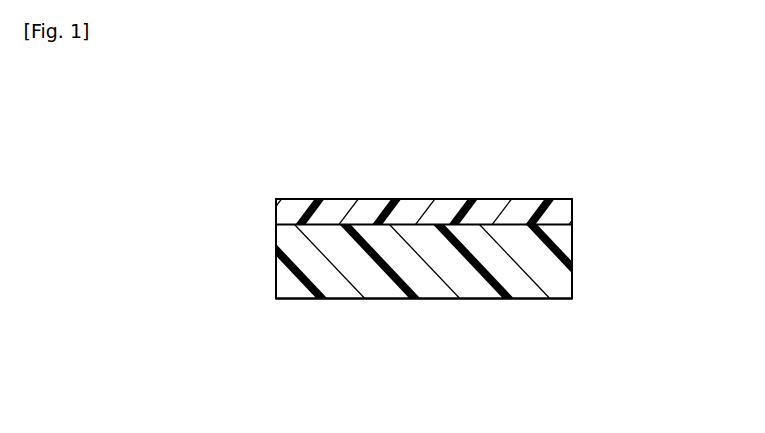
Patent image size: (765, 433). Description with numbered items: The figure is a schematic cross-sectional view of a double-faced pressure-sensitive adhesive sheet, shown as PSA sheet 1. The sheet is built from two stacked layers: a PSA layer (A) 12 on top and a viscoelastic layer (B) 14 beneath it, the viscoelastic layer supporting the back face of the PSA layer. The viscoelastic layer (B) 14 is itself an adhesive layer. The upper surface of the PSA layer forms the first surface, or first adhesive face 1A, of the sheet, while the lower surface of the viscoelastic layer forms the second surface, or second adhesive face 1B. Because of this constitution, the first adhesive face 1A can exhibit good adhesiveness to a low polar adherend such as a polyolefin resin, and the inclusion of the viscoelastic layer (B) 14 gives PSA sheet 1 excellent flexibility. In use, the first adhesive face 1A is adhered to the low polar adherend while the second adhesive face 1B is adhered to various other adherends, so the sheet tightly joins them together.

The PSA sheet 1 is at (449, 241).
The PSA layer (A) 12 is at (567, 213).
The viscoelastic layer (B) 14 is at (562, 277).
The first surface (first adhesive face) 1A is at (453, 165).
The second surface (second adhesive face) 1B is at (425, 336).